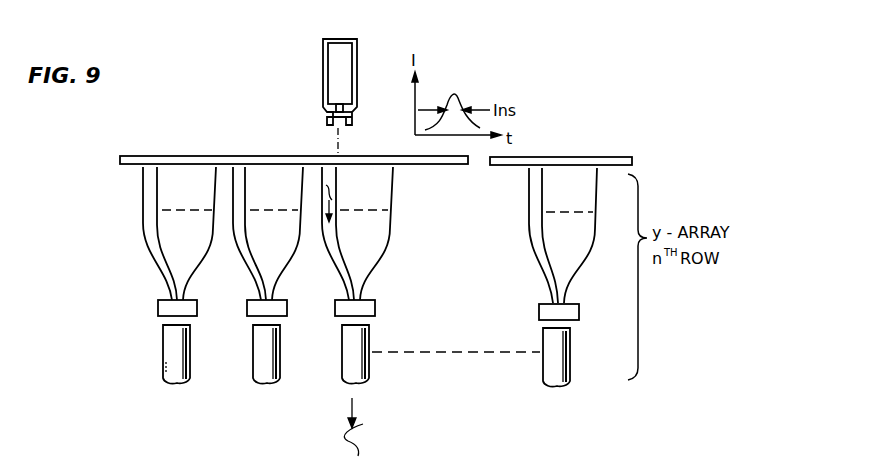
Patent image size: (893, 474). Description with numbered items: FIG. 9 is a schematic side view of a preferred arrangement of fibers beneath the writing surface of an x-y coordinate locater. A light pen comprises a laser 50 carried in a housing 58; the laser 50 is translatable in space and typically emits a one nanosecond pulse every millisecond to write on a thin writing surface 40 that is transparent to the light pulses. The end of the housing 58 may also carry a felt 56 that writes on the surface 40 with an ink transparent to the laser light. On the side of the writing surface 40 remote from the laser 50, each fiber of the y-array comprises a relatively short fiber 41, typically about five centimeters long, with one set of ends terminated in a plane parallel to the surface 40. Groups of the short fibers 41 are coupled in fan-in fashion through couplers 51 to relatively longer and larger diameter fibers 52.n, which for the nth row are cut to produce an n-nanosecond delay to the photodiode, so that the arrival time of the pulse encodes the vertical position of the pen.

The writing surface 40 is at (191, 156).
The short fiber 41 is at (393, 190).
The laser 50 is at (333, 57).
The coupler 51 is at (375, 310).
The longer fiber of the nth row 52.n is at (163, 374).
The felt 56 is at (327, 121).
The housing 58 is at (340, 40).